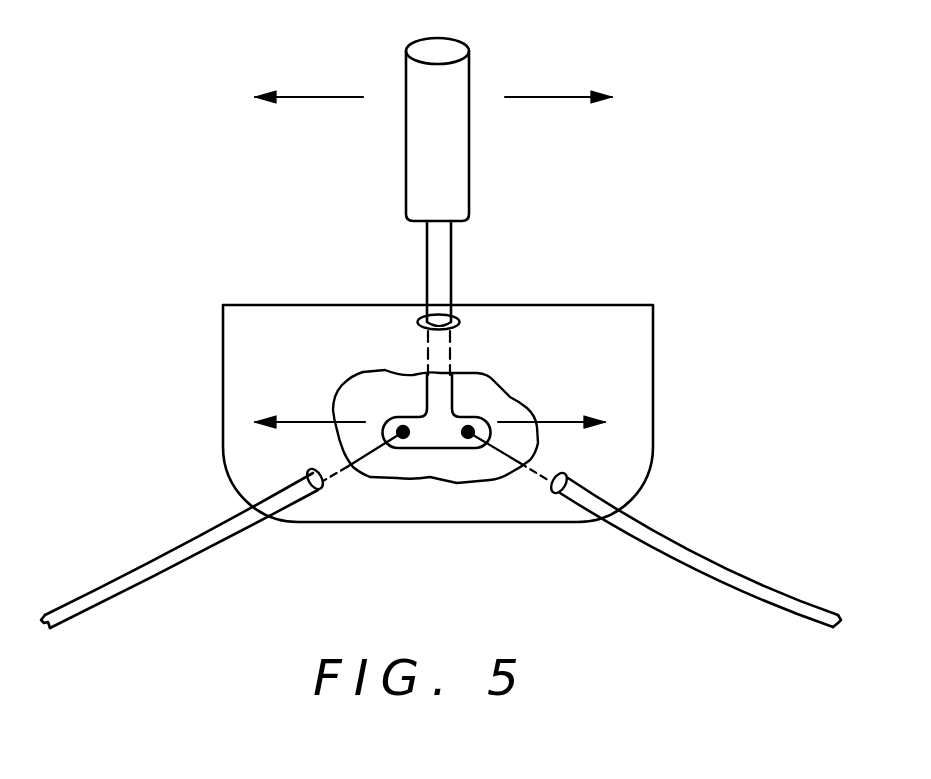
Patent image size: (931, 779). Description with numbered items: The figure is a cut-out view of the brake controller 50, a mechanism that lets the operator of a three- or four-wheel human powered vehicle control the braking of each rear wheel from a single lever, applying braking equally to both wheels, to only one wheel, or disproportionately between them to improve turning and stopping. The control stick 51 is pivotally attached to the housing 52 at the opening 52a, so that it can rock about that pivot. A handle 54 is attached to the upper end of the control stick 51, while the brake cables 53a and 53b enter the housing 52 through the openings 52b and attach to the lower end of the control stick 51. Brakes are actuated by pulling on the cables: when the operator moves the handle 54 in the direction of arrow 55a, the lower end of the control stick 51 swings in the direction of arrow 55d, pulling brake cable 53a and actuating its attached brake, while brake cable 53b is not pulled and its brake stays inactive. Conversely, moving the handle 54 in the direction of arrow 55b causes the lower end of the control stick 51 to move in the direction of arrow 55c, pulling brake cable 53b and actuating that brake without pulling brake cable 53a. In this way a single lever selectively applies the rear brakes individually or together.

The brake controller 50 is at (295, 220).
The control stick 51 is at (452, 263).
The housing 52 is at (654, 318).
The opening 52a is at (453, 320).
The openings 52b is at (323, 492).
The brake cable 53a is at (347, 446).
The brake cable 53b is at (530, 468).
The handle 54 is at (469, 153).
The arrow 55a is at (337, 96).
The arrow 55b is at (533, 96).
The arrow 55c is at (310, 421).
The arrow 55d is at (550, 421).